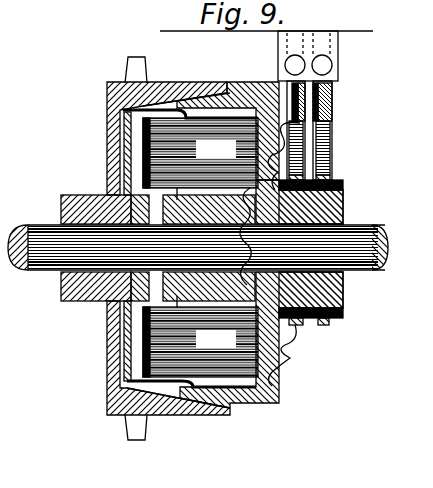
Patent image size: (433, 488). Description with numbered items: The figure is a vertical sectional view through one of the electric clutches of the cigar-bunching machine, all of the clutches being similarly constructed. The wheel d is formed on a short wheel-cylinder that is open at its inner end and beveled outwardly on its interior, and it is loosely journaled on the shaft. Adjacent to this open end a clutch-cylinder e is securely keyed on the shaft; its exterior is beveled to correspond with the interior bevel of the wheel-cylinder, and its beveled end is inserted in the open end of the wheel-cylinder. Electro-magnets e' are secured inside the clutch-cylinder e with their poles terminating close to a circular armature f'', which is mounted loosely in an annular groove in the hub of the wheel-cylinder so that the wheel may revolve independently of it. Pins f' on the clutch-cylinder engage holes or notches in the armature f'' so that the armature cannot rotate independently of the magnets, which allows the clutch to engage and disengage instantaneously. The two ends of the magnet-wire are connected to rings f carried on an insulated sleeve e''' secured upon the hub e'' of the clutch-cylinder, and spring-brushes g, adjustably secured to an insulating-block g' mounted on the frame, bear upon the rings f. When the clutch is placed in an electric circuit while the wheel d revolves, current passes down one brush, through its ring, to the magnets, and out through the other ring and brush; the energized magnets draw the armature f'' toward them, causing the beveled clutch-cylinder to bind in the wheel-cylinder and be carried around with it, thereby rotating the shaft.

The wheel d is at (151, 248).
The clutch-cylinder e is at (260, 236).
The electro-magnets e' is at (200, 247).
The hub of the clutch-cylinder e'' is at (328, 249).
The insulated sleeve e''' is at (331, 242).
The rings f is at (296, 253).
The pins f' is at (189, 261).
The armature f'' is at (103, 246).
The spring-brushes g is at (321, 130).
The insulating-block g' is at (326, 56).